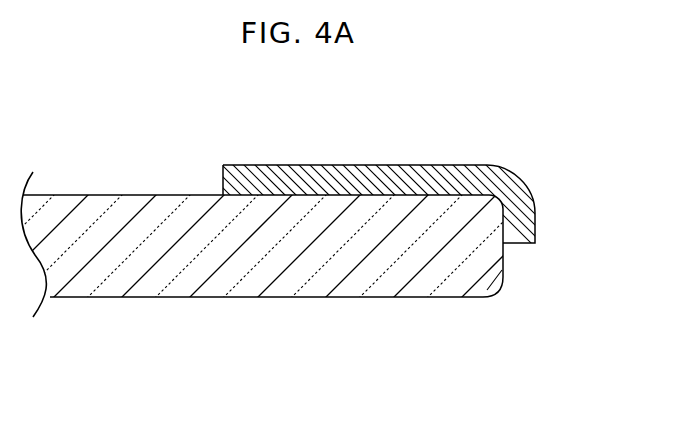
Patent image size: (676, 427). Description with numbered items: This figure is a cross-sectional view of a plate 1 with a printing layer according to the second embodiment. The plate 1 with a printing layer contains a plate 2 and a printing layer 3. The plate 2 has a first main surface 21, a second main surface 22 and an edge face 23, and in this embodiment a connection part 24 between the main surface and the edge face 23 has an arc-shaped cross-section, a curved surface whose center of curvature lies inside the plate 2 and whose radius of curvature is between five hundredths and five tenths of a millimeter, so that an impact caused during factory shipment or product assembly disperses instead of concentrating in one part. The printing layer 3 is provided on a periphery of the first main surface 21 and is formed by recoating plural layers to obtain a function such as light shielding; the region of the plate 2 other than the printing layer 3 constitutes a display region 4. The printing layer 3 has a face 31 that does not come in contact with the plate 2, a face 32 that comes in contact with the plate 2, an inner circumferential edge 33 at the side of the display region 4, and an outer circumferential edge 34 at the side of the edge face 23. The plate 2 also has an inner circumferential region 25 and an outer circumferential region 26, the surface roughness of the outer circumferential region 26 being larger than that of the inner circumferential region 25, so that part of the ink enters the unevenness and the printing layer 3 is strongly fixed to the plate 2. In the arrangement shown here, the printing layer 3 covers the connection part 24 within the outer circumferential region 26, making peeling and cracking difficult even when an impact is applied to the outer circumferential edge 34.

The plate with a printing layer 1 is at (402, 104).
The plate 2 is at (112, 278).
The printing layer 3 is at (338, 165).
The display region 4 is at (63, 194).
The first main surface 21 is at (104, 194).
The second main surface 22 is at (208, 297).
The edge face 23 is at (505, 273).
The connection part 24 is at (500, 208).
The inner circumferential region 25 is at (242, 195).
The outer circumferential region 26 is at (503, 243).
The face that does not come in contact with the plate 31 is at (280, 164).
The face that comes in contact with the plate 32 is at (357, 195).
The inner circumferential edge 33 is at (223, 180).
The outer circumferential edge 34 is at (532, 245).